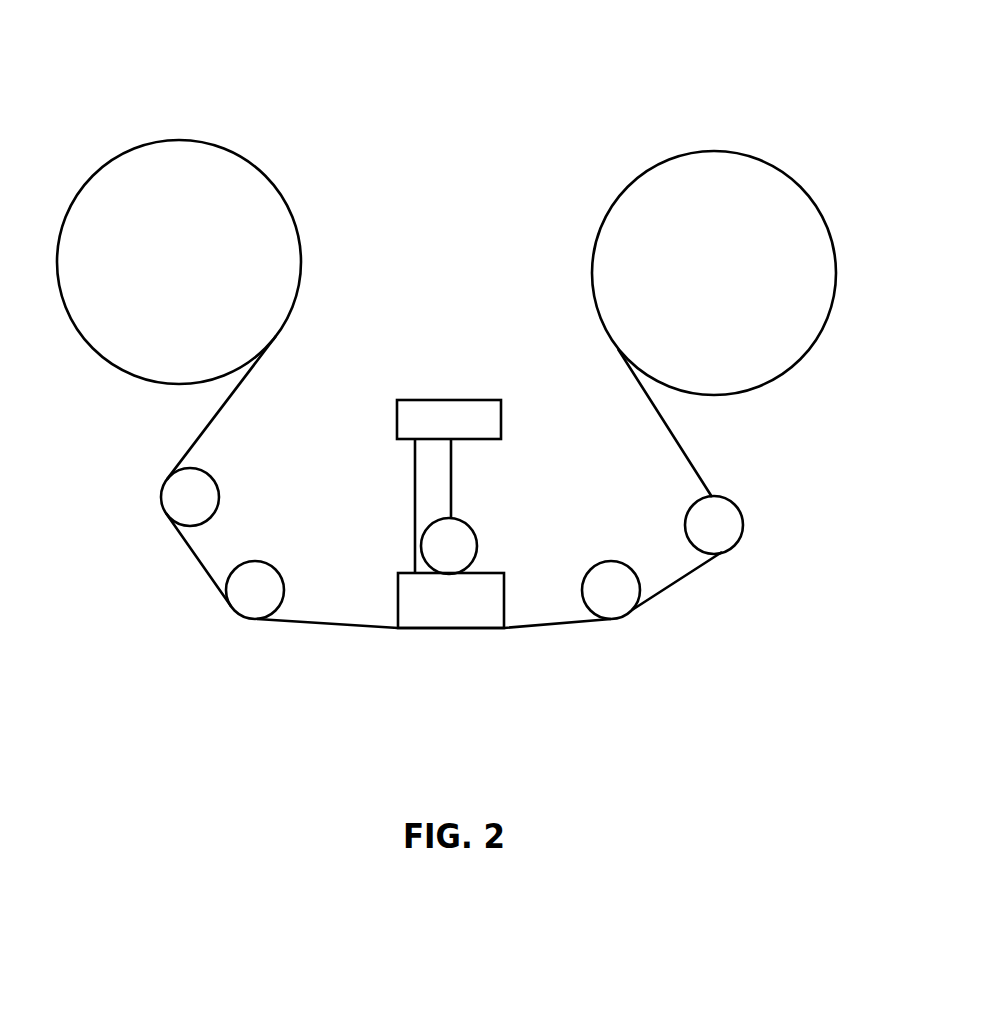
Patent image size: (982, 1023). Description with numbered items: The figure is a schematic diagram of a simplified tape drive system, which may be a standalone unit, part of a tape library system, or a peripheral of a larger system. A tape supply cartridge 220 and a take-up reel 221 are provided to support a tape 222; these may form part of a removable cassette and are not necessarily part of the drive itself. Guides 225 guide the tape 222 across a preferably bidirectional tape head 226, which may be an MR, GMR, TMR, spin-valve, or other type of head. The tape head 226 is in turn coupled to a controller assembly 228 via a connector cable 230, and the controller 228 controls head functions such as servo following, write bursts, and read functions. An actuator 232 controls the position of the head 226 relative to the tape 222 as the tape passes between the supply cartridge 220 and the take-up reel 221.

The tape supply cartridge 220 is at (180, 139).
The take-up reel 221 is at (716, 150).
The tape 222 is at (328, 625).
The guides 225 is at (218, 493).
The tape head 226 is at (504, 598).
The controller assembly 228 is at (448, 399).
The connector cable 230 is at (415, 543).
The actuator 232 is at (470, 523).